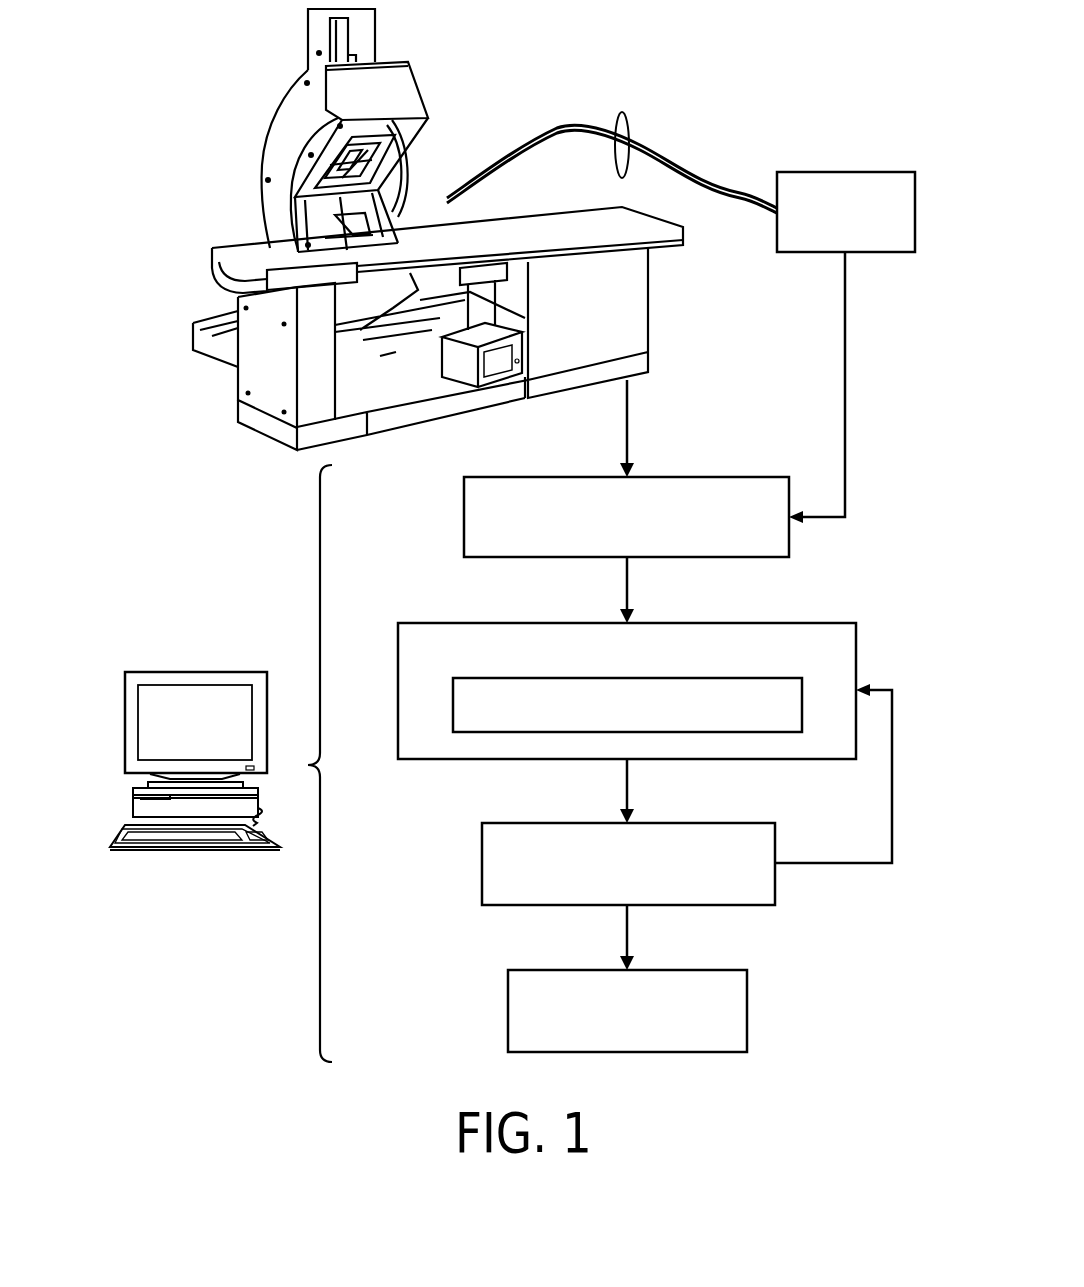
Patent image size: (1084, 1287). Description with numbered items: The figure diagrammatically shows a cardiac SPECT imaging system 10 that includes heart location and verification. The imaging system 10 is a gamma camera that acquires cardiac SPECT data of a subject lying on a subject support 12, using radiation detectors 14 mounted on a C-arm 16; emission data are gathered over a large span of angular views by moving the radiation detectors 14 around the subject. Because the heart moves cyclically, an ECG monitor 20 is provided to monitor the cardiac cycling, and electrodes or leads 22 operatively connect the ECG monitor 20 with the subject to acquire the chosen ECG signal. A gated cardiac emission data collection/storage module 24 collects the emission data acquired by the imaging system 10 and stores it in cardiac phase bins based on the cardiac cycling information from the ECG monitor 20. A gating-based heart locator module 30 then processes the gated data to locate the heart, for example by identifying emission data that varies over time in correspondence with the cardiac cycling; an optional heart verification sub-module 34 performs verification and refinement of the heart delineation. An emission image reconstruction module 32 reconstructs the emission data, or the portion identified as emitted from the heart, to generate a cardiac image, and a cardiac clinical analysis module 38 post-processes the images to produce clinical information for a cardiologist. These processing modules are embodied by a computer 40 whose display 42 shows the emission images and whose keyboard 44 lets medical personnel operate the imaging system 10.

The imaging system 10 is at (474, 113).
The subject support 12 is at (568, 223).
The radiation detectors 14 is at (322, 182).
The C-arm 16 is at (295, 97).
The ECG monitor 20 is at (845, 172).
The electrodes or leads 22 is at (635, 118).
The gated cardiac emission data collection/storage module 24 is at (464, 520).
The gating-based heart locator module 30 is at (398, 660).
The emission image reconstruction module 32 is at (482, 865).
The heart verification sub-module 34 is at (453, 705).
The cardiac clinical analysis module 38 is at (508, 1012).
The computer 40 is at (195, 739).
The display 42 is at (173, 695).
The keyboard 44 is at (200, 842).